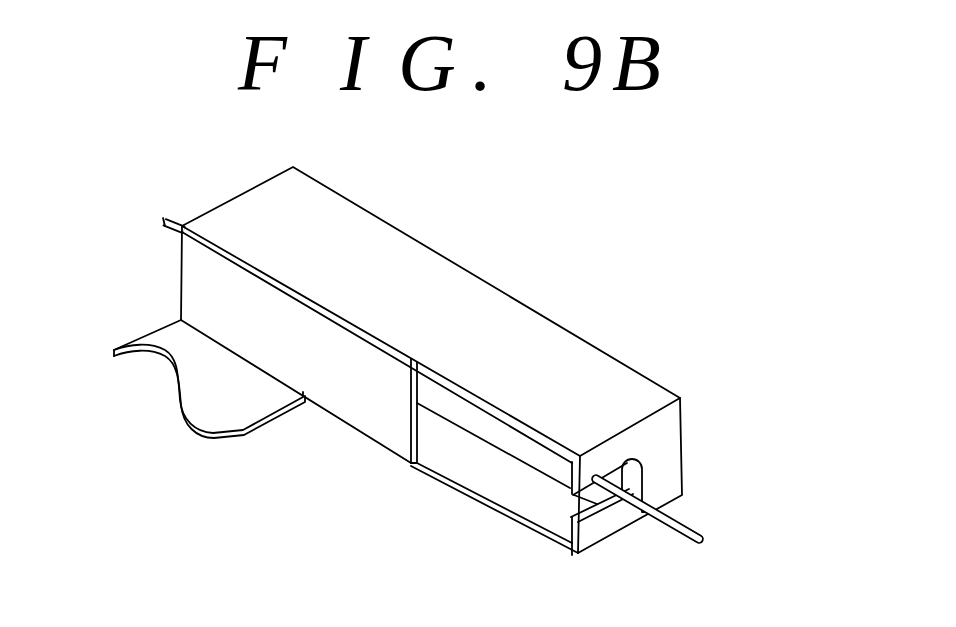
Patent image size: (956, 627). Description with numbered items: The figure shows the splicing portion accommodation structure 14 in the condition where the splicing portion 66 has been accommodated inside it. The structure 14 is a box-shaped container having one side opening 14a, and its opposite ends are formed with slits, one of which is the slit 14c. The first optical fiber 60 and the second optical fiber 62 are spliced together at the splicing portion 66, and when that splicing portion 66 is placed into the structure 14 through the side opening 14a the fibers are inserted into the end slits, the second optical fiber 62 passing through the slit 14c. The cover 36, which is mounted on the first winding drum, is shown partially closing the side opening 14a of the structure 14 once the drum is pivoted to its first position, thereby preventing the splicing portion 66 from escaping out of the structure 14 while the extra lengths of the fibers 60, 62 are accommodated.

The splicing portion accommodation structure 14 is at (478, 277).
The side opening 14a is at (527, 502).
The slit 14c is at (604, 503).
The cover 36 is at (200, 284).
The first optical fiber 60 is at (166, 219).
The second optical fiber 62 is at (683, 520).
The splicing portion 66 is at (507, 446).